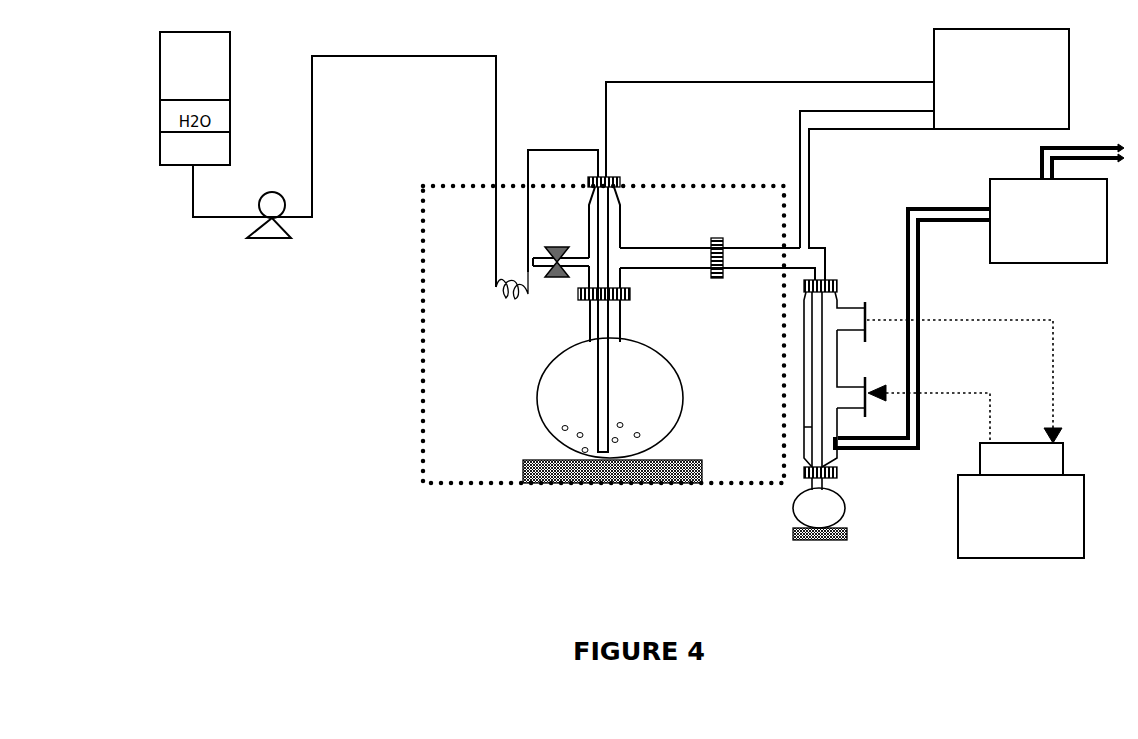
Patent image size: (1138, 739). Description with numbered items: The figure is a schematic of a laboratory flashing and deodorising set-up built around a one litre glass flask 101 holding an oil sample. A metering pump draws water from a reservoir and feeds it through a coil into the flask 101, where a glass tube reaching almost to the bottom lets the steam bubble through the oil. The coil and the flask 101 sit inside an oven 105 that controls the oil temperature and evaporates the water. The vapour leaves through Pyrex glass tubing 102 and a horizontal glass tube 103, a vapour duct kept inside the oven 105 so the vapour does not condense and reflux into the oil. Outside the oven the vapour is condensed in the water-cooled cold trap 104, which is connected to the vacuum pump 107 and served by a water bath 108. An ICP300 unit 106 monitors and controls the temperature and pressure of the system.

The flask 101 is at (538, 404).
The Pyrex glass tubing 102 is at (647, 246).
The horizontal glass tube 103 is at (765, 248).
The cold trap 104 is at (795, 523).
The oven 105 is at (428, 250).
The ICP300 106 is at (837, 154).
The vacuum pump 107 is at (979, 296).
The water bath 108 is at (975, 439).